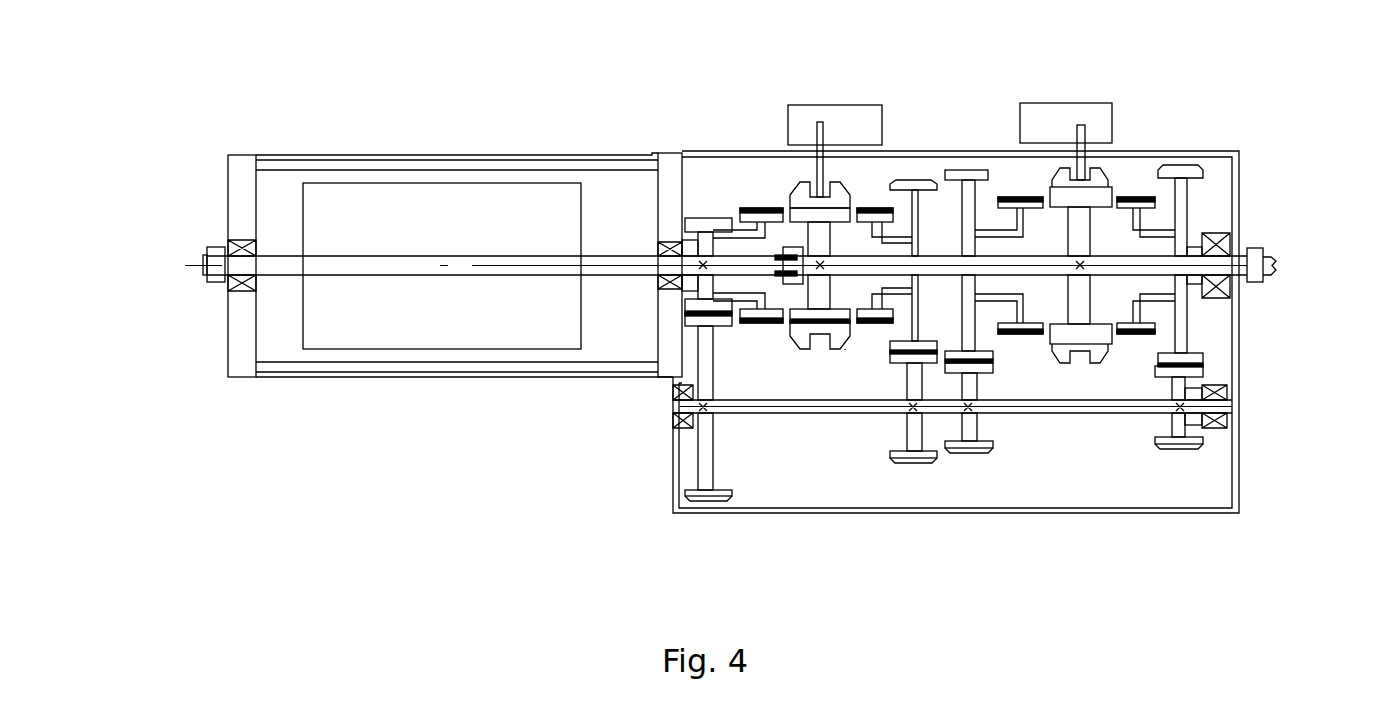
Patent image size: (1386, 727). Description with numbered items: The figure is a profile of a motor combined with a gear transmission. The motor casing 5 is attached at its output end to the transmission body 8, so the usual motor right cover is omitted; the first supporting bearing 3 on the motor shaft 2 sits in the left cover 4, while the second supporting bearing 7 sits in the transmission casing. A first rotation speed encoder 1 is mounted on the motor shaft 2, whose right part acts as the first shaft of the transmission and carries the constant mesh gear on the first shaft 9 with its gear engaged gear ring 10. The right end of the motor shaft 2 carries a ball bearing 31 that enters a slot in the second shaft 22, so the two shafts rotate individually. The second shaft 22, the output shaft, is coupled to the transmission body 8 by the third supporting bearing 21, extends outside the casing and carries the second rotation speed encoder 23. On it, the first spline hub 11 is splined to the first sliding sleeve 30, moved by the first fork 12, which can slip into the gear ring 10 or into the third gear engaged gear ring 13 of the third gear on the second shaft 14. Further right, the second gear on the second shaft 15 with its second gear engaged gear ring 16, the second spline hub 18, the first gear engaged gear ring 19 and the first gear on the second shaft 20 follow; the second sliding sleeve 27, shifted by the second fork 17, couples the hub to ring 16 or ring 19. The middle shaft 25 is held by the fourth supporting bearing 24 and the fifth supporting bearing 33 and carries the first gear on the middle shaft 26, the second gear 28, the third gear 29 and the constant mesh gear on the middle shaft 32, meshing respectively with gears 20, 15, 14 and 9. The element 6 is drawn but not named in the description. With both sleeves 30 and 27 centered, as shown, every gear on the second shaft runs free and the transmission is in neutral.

The first rotation speed encoder 1 is at (208, 283).
The motor shaft 2 is at (212, 279).
The first supporting bearing 3 is at (236, 245).
The left cover 4 is at (242, 195).
The motor casing 5 is at (328, 165).
The motor 6 is at (478, 200).
The second supporting bearing 7 is at (670, 243).
The transmission body 8 is at (670, 157).
The constant mesh gear on the first shaft 9 is at (705, 227).
The gear engaged gear ring on the first shaft 10 is at (758, 213).
The first spline hub 11 is at (792, 220).
The first fork 12 is at (818, 105).
The third gear engaged gear ring on the second shaft 13 is at (880, 212).
The third gear on the second shaft 14 is at (933, 183).
The second gear on the second shaft 15 is at (972, 172).
The second gear engaged gear ring on the second shaft 16 is at (1023, 197).
The second fork 17 is at (1085, 103).
The second spline hub 18 is at (1112, 196).
The first gear engaged gear ring on the second shaft 19 is at (1140, 195).
The first gear on the second shaft 20 is at (1180, 168).
The third supporting bearing 21 is at (1217, 235).
The second shaft 22 is at (1245, 258).
The second rotation speed encoder 23 is at (1253, 253).
The fourth supporting bearing 24 is at (1225, 390).
The middle shaft 25 is at (1227, 402).
The first gear on the middle shaft 26 is at (1182, 446).
The second sliding sleeve 27 is at (1107, 357).
The second gear on the middle shaft 28 is at (968, 446).
The third gear on the middle shaft 29 is at (915, 462).
The first sliding sleeve 30 is at (845, 350).
The ball bearing 31 is at (777, 279).
The constant mesh gear on the middle shaft 32 is at (710, 497).
The fifth supporting bearing 33 is at (680, 430).